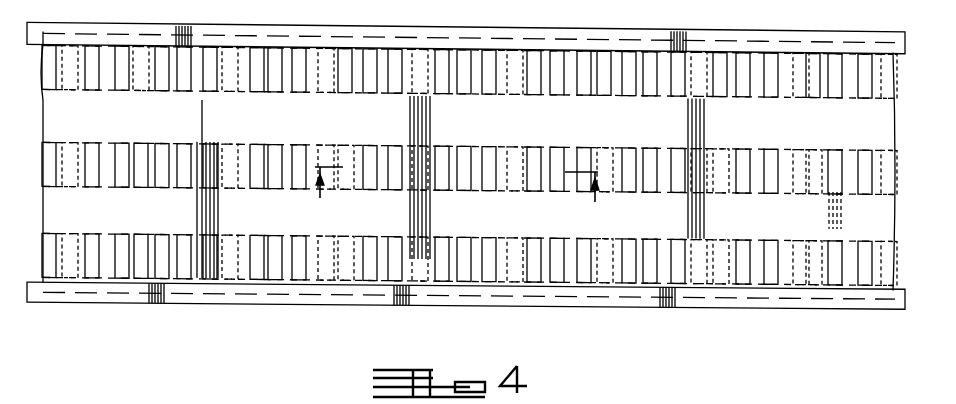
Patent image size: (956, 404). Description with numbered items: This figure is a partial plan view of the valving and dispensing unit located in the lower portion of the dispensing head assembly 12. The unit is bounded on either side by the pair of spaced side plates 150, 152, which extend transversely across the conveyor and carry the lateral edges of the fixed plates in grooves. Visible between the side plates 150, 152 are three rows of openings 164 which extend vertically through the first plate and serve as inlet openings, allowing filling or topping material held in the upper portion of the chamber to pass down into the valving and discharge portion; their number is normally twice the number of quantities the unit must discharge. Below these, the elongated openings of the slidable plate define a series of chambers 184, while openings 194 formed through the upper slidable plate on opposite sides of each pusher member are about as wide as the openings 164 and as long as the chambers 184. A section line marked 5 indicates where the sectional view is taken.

The dispensing head assembly 12 is at (229, 311).
The side plate 150 is at (449, 27).
The side plate 152 is at (569, 304).
The openings 164 is at (490, 147).
The chambers 184 is at (105, 183).
The openings 194 is at (245, 188).
The section line 5- 5 is at (300, 227).